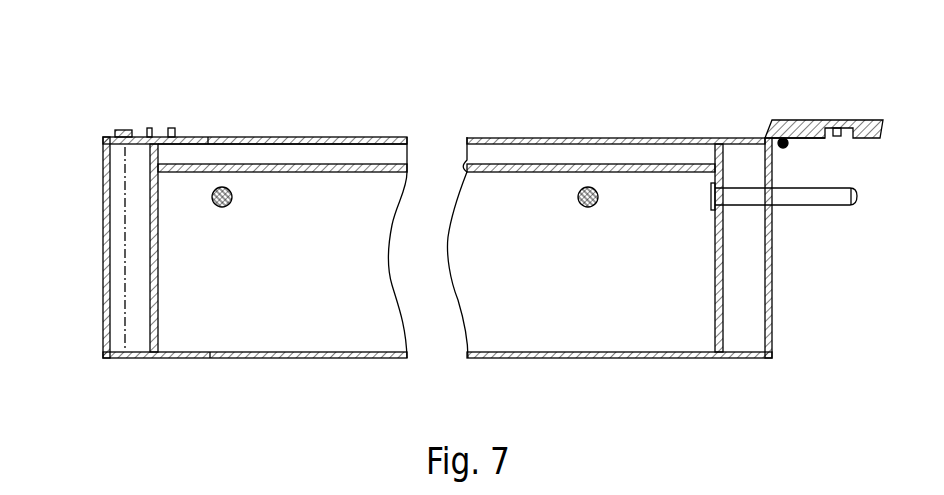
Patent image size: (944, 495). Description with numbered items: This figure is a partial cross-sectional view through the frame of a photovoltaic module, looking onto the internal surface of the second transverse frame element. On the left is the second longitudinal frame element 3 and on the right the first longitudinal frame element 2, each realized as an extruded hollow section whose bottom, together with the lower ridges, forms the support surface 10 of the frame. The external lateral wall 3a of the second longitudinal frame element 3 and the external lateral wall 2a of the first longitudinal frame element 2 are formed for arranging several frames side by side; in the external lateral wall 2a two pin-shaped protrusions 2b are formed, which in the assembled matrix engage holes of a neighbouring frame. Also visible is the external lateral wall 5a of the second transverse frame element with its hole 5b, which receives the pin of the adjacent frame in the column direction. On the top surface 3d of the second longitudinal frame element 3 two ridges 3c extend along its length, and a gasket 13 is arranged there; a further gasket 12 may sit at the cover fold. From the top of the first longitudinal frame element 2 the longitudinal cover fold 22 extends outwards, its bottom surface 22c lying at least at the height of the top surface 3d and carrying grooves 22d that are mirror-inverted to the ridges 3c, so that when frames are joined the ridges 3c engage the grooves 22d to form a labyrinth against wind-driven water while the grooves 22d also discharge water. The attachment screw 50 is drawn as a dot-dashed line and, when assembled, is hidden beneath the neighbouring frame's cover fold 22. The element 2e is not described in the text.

The first longitudinal frame element 2 is at (722, 308).
The external lateral wall of the first longitudinal frame element 2a is at (771, 260).
The protrusions 2b is at (814, 199).
The bottom of holder 2e is at (741, 358).
The second longitudinal frame element 3 is at (152, 262).
The external lateral wall of the second longitudinal frame element 3a is at (105, 215).
The ridges 3c is at (170, 127).
The top surface of the second longitudinal frame element 3d is at (187, 138).
The external lateral wall of the second transverse frame element 5a is at (327, 296).
The hole 5b is at (222, 208).
The support surface 10 is at (181, 361).
The gasket 12 is at (782, 138).
The gasket 13 is at (122, 130).
The longitudinal cover fold 22 is at (866, 113).
The bottom surface of the longitudinal cover fold 22c is at (803, 143).
The grooves 22d is at (842, 120).
The attachment screws 50 is at (124, 327).